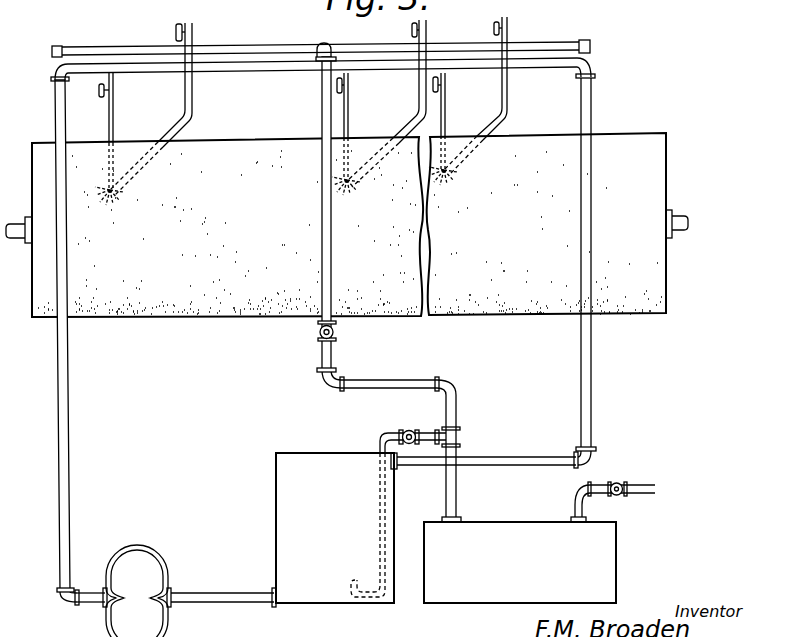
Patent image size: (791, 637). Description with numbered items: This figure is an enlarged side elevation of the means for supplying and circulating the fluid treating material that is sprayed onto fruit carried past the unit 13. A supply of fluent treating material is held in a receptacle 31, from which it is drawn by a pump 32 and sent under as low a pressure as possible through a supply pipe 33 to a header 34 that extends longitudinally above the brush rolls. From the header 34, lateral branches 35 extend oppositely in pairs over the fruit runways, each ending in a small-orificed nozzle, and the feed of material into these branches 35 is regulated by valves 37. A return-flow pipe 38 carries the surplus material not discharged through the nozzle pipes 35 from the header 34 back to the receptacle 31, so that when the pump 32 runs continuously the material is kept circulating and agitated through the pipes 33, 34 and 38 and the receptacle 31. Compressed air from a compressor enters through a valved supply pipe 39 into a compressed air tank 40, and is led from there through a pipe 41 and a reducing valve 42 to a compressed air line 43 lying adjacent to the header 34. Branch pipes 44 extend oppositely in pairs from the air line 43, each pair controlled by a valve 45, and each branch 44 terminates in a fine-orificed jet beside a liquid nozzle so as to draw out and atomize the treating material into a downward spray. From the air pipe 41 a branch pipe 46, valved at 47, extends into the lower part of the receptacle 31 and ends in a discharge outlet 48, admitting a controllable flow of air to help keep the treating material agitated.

The trough tank 13 is at (230, 152).
The receptacle 31 is at (335, 528).
The pump 32 is at (150, 562).
The supply pipe 33 is at (67, 416).
The header 34 is at (519, 73).
The lateral branches 35 is at (110, 131).
The valves 37 is at (98, 93).
The return-flow pipe 38 is at (589, 374).
The valved supply pipe 39 is at (572, 503).
The compressed air tank 40 is at (520, 562).
The pipe 41 is at (457, 414).
The reducing valve 42 is at (336, 332).
The compressed air line 43 is at (530, 49).
The branch pipes 44 is at (190, 107).
The valve 45 is at (176, 32).
The branch pipe 46 is at (381, 436).
The valve 47 is at (410, 430).
The discharge outlet 48 is at (349, 598).